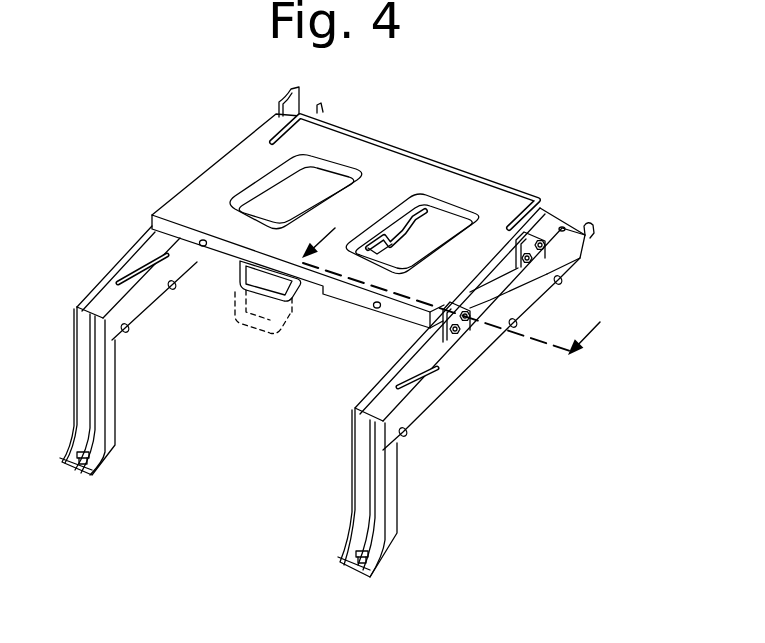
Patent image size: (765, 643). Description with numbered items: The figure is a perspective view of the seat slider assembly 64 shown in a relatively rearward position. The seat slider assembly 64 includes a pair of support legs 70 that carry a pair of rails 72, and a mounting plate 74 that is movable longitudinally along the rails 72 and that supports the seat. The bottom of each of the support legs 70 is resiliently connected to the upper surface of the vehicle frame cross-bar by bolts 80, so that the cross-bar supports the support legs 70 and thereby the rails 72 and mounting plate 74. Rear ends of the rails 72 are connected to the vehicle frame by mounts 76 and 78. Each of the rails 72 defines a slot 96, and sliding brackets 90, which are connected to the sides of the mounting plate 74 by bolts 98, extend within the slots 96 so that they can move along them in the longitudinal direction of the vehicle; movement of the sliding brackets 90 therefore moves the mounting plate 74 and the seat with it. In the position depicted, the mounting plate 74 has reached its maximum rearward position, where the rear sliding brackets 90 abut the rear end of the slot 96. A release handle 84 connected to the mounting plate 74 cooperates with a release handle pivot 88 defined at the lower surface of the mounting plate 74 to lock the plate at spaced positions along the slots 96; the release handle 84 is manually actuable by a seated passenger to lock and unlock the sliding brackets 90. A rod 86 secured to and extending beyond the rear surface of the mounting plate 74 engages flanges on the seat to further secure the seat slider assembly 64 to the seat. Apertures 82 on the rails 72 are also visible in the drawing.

The seat slider assembly 64 is at (534, 473).
The support legs 70 is at (112, 393).
The rails 72 is at (102, 297).
The mounting plate 74 is at (442, 183).
The mount 76 is at (283, 98).
The mount 78 is at (586, 224).
The bolts 80 is at (76, 470).
The aperture 82 is at (129, 330).
The release handle 84 is at (270, 305).
The rod 86 is at (417, 158).
The release handle pivot 88 is at (397, 240).
The sliding brackets 90 is at (527, 247).
The slot 96 is at (417, 378).
The bolts 98 is at (532, 259).